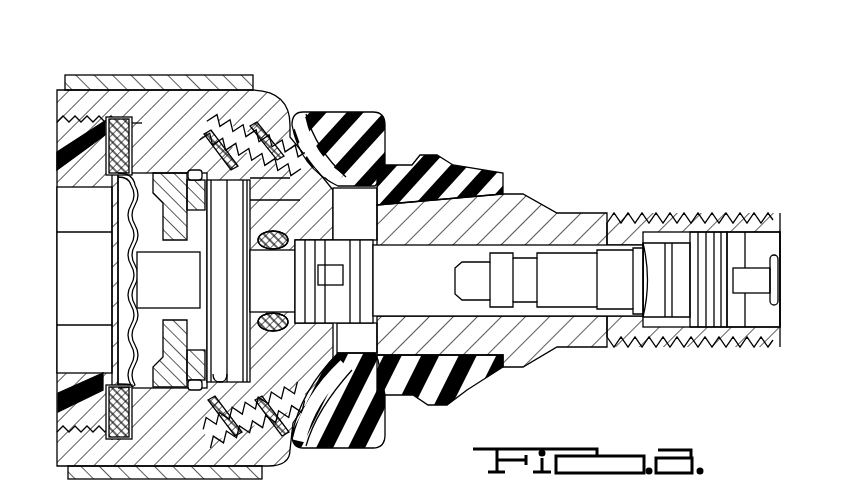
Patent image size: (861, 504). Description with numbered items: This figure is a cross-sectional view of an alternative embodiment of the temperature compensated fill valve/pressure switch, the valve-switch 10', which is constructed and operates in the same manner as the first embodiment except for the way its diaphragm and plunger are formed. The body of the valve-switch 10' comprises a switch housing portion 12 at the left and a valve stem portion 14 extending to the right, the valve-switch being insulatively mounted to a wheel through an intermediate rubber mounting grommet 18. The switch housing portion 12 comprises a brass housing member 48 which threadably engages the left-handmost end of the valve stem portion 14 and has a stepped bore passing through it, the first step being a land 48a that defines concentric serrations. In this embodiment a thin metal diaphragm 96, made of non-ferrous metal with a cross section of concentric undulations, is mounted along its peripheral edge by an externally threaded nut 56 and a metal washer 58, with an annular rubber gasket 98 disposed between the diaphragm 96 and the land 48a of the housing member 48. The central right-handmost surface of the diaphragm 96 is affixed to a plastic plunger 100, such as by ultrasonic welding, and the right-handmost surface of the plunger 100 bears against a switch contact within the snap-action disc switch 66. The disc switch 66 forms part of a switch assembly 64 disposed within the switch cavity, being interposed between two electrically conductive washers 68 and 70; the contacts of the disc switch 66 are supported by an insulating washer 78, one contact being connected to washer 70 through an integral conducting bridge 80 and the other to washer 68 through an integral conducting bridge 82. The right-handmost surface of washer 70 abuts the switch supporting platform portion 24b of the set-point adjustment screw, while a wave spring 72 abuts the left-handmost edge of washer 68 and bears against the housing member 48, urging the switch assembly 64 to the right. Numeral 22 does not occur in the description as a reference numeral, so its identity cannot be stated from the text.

The valve-switch 10' is at (450, 113).
The switch housing portion 12 is at (177, 93).
The valve stem portion 14 is at (705, 222).
The rubber mounting grommet 18 is at (505, 170).
The valve stem 22 is at (615, 255).
The switch supporting platform portion 24b is at (253, 378).
The housing member 48 is at (232, 110).
The land 48a is at (142, 123).
The nut 56 is at (73, 133).
The washer 58 is at (95, 175).
The switch assembly 64 is at (252, 345).
The snap-action disc switch 66 is at (215, 210).
The washer 68 is at (255, 186).
The washer 70 is at (210, 218).
The wave spring 72 is at (177, 176).
The insulating washer 78 is at (244, 272).
The conducting bridge 80 is at (215, 400).
The conducting bridge 82 is at (200, 168).
The thin metal diaphragm 96 is at (115, 197).
The annular rubber gasket 98 is at (108, 122).
The plunger 100 is at (190, 286).